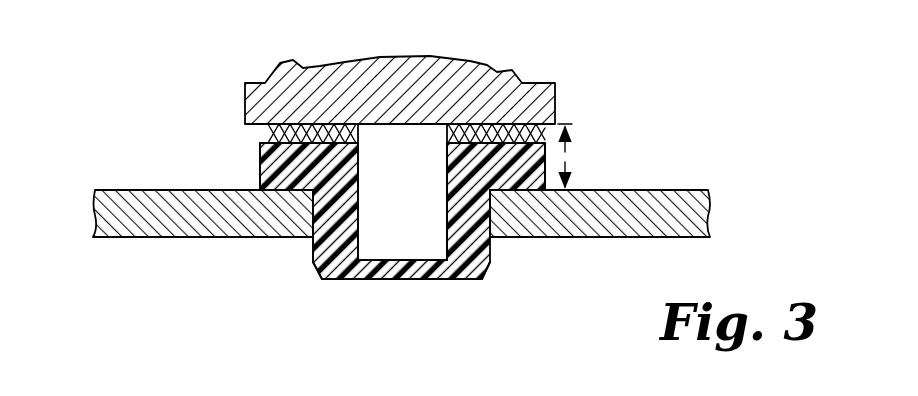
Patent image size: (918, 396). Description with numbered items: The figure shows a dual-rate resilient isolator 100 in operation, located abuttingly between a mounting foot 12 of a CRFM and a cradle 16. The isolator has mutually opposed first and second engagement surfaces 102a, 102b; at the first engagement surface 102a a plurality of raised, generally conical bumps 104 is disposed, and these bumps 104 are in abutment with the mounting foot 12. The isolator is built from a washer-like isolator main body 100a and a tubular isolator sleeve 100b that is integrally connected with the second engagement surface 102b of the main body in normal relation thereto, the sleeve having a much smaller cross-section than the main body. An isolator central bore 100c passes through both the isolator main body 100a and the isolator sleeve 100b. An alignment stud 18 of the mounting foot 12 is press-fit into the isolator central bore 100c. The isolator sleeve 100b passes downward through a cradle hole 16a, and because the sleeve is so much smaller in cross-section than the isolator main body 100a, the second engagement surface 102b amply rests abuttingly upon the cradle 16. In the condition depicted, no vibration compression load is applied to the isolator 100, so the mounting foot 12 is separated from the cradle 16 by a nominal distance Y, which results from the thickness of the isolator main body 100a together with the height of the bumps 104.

The mounting foot 12 is at (557, 100).
The cradle 16 is at (650, 190).
The cradle hole 16a is at (483, 228).
The alignment stud 18 is at (418, 261).
The dual-rate resilient isolator 100 is at (255, 161).
The isolator main body 100a is at (255, 168).
The isolator sleeve 100b is at (312, 242).
The isolator central bore 100c is at (358, 202).
The first engagement surface 102a is at (462, 140).
The second engagement surface 102b is at (527, 190).
The bumps 104 is at (317, 130).
The nominal distance Y is at (570, 157).